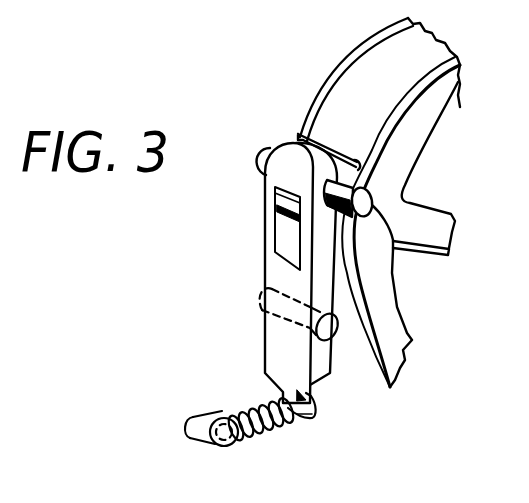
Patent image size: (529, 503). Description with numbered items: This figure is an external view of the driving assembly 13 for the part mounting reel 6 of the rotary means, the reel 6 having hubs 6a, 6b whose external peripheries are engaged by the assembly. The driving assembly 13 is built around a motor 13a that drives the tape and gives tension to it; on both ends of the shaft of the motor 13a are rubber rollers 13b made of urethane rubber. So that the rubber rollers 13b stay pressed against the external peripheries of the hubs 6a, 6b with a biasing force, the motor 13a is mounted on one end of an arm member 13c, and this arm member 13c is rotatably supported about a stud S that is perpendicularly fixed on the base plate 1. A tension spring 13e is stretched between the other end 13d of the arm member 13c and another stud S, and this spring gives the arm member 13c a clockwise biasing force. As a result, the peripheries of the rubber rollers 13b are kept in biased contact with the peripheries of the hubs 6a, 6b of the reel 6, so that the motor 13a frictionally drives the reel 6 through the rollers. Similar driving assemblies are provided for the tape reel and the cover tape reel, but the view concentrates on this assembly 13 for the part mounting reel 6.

The base plate 1 is at (253, 161).
The part mounting reel 6 is at (465, 233).
The hub 6a is at (352, 80).
The hub 6b is at (448, 95).
The driving assembly 13 is at (330, 375).
The motor 13a is at (297, 132).
The rubber rollers 13b is at (260, 150).
The arm member 13c is at (266, 213).
The spring hook end 13d is at (313, 420).
The tension spring 13e is at (258, 446).
The stud S is at (262, 297).